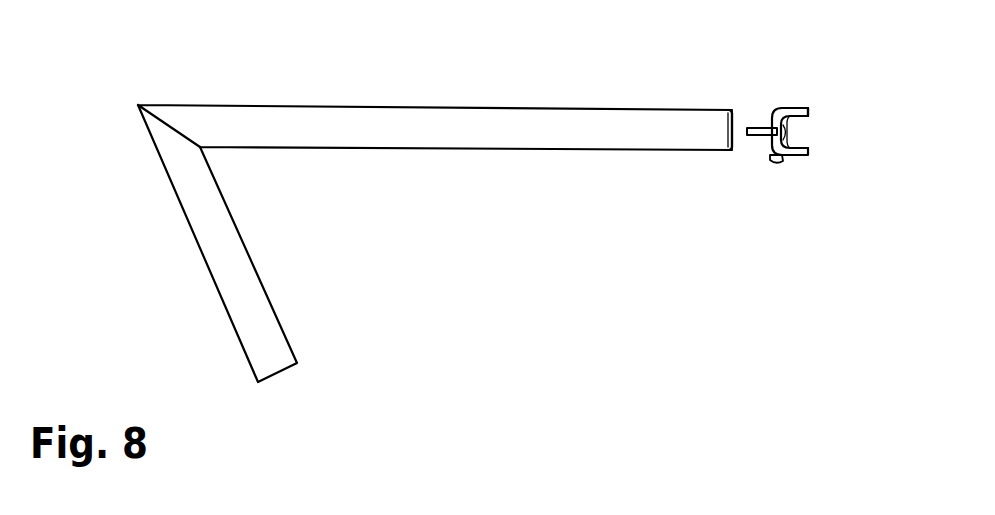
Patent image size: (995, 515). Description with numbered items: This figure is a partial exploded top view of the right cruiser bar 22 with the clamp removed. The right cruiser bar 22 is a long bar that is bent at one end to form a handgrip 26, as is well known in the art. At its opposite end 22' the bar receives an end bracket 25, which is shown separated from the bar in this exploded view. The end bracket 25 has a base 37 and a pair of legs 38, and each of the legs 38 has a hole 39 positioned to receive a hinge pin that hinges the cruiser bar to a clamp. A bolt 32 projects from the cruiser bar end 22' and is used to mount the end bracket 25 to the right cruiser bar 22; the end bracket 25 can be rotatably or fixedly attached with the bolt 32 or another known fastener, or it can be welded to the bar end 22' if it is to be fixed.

The right cruiser bar 22 is at (435, 101).
The end of right cruiser bar 22' is at (714, 100).
The handgrip 26 is at (217, 252).
The bolt 32 is at (760, 130).
The end bracket 25 is at (782, 160).
The hole 39 is at (787, 107).
The legs 38 is at (810, 117).
The base 37 is at (770, 158).